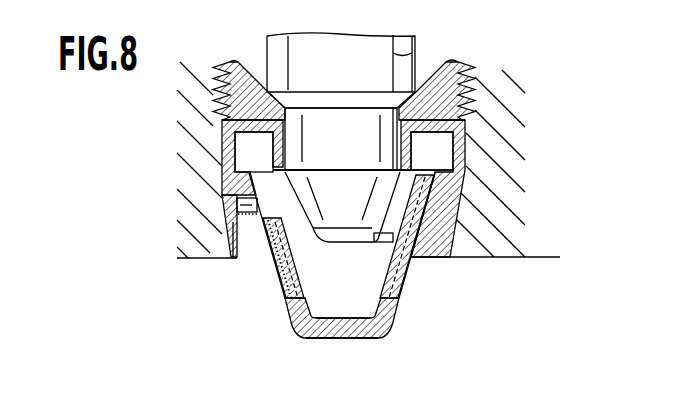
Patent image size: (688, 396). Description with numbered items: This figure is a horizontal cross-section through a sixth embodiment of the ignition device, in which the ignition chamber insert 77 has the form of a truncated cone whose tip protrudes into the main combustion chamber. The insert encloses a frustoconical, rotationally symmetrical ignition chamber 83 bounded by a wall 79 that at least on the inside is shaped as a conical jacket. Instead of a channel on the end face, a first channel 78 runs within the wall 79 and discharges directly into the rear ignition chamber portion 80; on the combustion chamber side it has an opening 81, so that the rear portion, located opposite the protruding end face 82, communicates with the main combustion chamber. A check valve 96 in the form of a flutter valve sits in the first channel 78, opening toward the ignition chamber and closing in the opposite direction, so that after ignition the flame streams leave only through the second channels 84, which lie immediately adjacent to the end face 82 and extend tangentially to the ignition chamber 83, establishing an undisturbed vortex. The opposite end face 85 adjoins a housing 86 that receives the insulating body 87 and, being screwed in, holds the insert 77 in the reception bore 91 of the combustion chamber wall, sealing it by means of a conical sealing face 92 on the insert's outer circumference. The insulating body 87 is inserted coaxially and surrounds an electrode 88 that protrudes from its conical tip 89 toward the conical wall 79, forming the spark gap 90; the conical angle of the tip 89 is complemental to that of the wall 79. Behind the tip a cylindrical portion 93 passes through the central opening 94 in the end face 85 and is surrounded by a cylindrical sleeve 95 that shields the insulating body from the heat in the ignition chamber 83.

The ignition chamber insert 77 is at (336, 336).
The first channel 78 is at (244, 243).
The wall 79 is at (291, 290).
The rear ignition chamber portion 80 is at (440, 153).
The opening 81 is at (263, 257).
The end face 82 is at (359, 329).
The ignition chamber 83 is at (340, 295).
The second channels 84 is at (390, 310).
The end face 85 is at (440, 128).
The housing 86 is at (452, 78).
The insulating body 87 is at (419, 36).
The electrode 88 is at (396, 236).
The conical tip 89 is at (342, 207).
The spark gap 90 is at (425, 266).
The reception bore 91 is at (456, 180).
The conical sealing face 92 is at (455, 202).
The cylindrical portion 93 is at (341, 131).
The central opening 94 is at (222, 120).
The cylindrical sleeve 95 is at (280, 153).
The check valve 96 is at (252, 203).